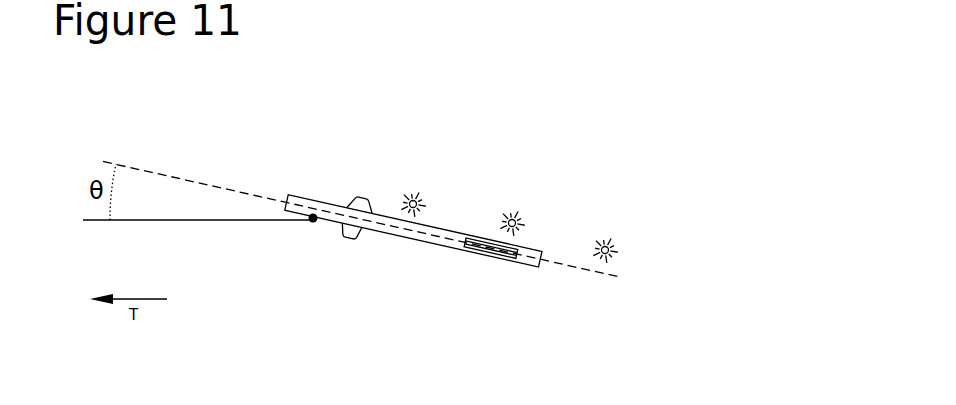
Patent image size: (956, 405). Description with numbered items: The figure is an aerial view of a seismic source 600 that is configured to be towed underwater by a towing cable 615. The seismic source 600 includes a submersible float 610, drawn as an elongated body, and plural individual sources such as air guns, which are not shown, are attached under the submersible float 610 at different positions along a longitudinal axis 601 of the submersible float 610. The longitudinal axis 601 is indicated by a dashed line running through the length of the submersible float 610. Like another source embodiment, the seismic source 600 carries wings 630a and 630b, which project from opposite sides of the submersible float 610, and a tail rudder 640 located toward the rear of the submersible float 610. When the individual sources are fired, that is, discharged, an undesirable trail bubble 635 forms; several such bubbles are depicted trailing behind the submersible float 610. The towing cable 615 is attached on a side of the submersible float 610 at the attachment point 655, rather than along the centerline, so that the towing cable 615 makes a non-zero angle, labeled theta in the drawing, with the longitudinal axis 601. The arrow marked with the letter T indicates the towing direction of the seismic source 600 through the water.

The seismic source 600 is at (498, 331).
The longitudinal axis 601 is at (213, 187).
The submersible float 610 is at (540, 250).
The towing cable 615 is at (120, 222).
The wing 630a is at (350, 240).
The wing 630b is at (362, 197).
The trail bubble 635 is at (615, 237).
The tail rudder 640 is at (473, 238).
The attachment point of towing cable 655 is at (311, 222).